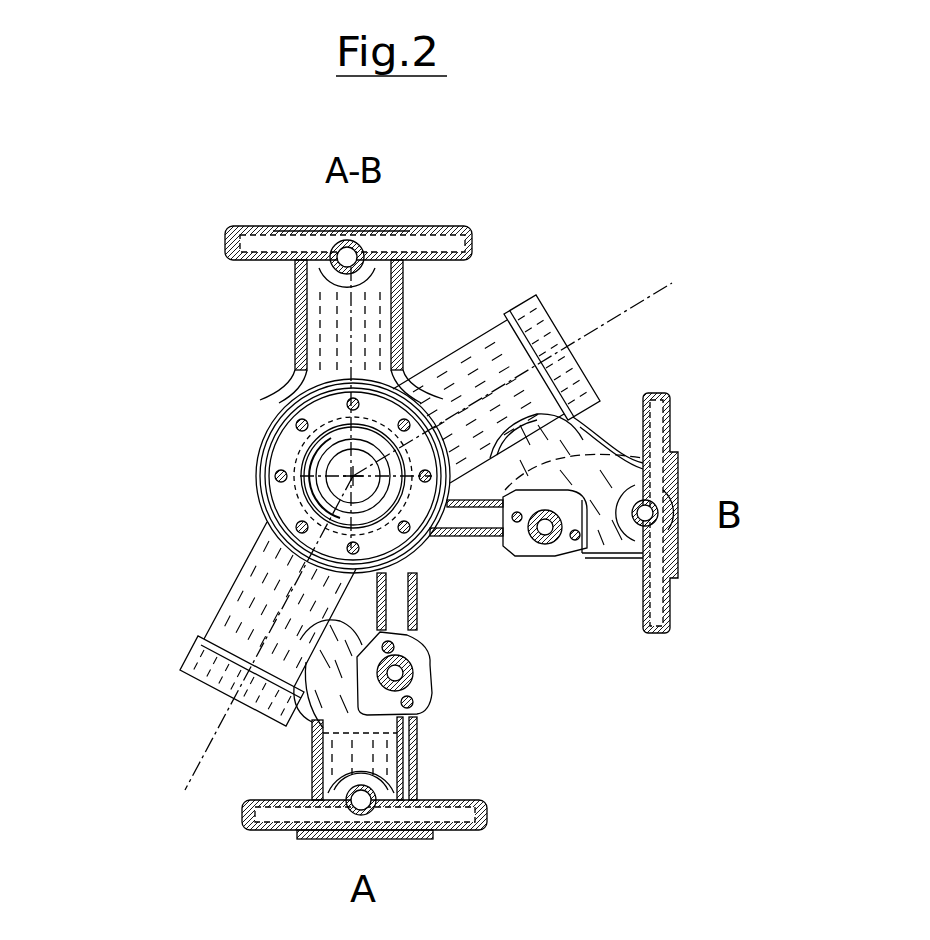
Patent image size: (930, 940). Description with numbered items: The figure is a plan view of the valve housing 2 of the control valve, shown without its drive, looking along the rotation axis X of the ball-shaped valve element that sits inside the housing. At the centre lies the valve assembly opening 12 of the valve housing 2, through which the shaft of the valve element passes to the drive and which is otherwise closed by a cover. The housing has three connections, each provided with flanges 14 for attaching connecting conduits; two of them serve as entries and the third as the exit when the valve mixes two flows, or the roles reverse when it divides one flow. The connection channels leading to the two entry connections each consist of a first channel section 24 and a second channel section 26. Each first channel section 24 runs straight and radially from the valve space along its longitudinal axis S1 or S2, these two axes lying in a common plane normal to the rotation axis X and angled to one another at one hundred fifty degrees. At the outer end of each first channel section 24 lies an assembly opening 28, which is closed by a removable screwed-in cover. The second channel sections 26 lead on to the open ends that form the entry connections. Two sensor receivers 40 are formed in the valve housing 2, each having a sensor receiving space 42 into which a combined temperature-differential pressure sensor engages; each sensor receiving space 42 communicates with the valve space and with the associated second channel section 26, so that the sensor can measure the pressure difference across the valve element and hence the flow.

The valve housing 2 is at (247, 410).
The valve assembly opening 12 is at (310, 453).
The flanges 14 is at (462, 236).
The first channel section 24 is at (447, 352).
The second channel section 26 is at (608, 543).
The assembly opening 28 is at (555, 309).
The sensor receiver 40 is at (530, 547).
The sensor receiving space 42 is at (560, 552).
The rotation axis X is at (348, 482).
The longitudinal axis S1 is at (655, 298).
The longitudinal axis S2 is at (200, 770).